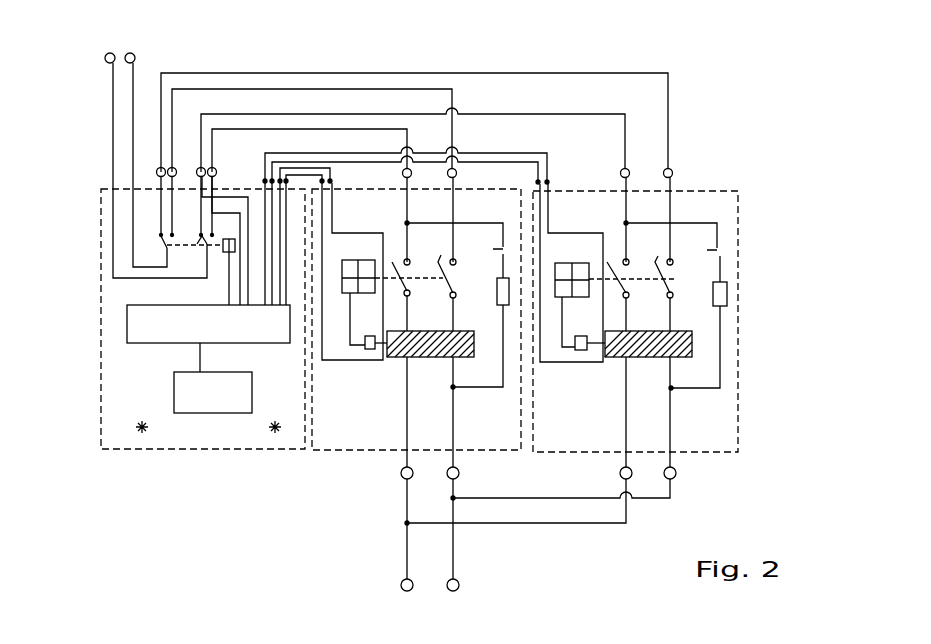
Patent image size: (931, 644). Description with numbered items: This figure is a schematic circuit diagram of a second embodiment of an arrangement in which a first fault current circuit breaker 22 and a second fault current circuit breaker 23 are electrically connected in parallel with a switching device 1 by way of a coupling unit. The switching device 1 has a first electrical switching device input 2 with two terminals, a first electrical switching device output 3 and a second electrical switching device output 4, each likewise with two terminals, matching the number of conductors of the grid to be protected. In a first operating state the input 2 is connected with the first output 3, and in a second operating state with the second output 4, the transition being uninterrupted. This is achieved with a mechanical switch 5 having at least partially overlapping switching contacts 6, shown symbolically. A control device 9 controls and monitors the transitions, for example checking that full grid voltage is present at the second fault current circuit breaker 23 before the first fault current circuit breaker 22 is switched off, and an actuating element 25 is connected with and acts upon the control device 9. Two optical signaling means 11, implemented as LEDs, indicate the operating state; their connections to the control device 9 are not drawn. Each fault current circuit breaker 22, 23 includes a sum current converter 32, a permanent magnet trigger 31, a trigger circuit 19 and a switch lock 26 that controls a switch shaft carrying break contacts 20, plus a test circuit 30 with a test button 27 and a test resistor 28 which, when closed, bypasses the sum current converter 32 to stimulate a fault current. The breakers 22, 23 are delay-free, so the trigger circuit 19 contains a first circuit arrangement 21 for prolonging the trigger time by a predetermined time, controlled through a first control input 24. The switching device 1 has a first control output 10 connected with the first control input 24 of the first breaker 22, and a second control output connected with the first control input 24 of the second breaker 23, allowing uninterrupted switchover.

The switching device 1 is at (108, 444).
The first electrical switching device input 2 is at (132, 189).
The first electrical switching device output 3 is at (212, 168).
The second electrical switching device output 4 is at (201, 168).
The mechanical switch 5 is at (167, 248).
The switching contacts 6 is at (162, 237).
The control device 9 is at (199, 334).
The first control output 10 is at (283, 180).
The signaling means 11 is at (277, 429).
The trigger circuit 19 is at (380, 348).
The break contacts 20 is at (405, 291).
The first circuit arrangement 21 is at (336, 231).
The first fault current circuit breaker 22 is at (337, 440).
The second fault current circuit breaker 23 is at (547, 444).
The first control input 24 is at (330, 179).
The actuating element 25 is at (199, 404).
The switch lock 26 is at (231, 253).
The test button 27 is at (496, 247).
The test resistor 28 is at (497, 282).
The test circuit 30 is at (457, 390).
The permanent magnet trigger 31 is at (366, 349).
The sum current converter 32 is at (453, 349).